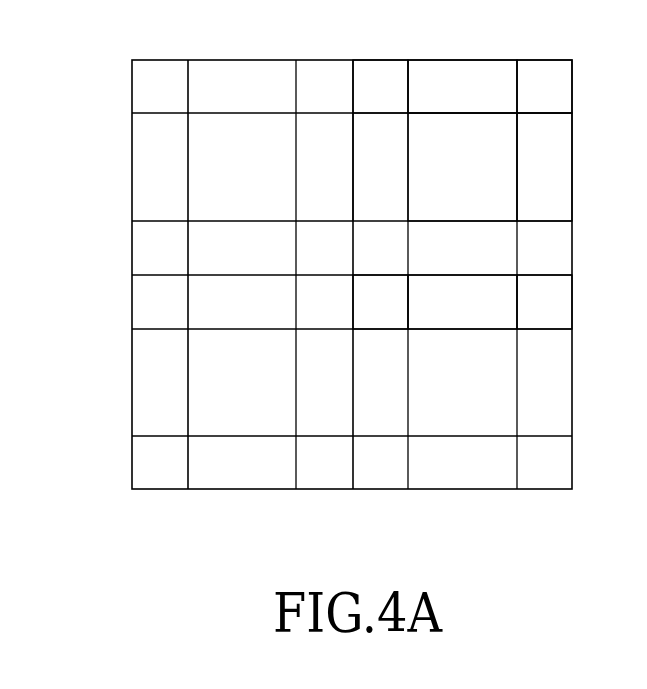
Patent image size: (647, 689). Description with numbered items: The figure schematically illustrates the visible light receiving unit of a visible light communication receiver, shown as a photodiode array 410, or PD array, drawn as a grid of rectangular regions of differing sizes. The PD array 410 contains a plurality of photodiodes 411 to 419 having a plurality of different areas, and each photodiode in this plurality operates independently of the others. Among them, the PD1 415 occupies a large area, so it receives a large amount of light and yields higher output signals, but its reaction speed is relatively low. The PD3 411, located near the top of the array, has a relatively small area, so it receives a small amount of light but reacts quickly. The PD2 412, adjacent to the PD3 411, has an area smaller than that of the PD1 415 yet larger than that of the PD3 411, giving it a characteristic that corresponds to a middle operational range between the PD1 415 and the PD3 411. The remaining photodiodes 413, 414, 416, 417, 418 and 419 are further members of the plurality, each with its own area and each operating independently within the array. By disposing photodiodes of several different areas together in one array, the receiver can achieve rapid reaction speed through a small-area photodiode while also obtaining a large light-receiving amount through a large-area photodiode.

The photodiode array 410 is at (131, 165).
The PD3 411 is at (382, 60).
The PD2 412 is at (463, 60).
The photodiode 413 is at (547, 60).
The photodiode 414 is at (358, 163).
The PD1 415 is at (415, 165).
The photodiode 416 is at (565, 168).
The photodiode 417 is at (375, 268).
The photodiode 418 is at (459, 268).
The photodiode 419 is at (538, 268).